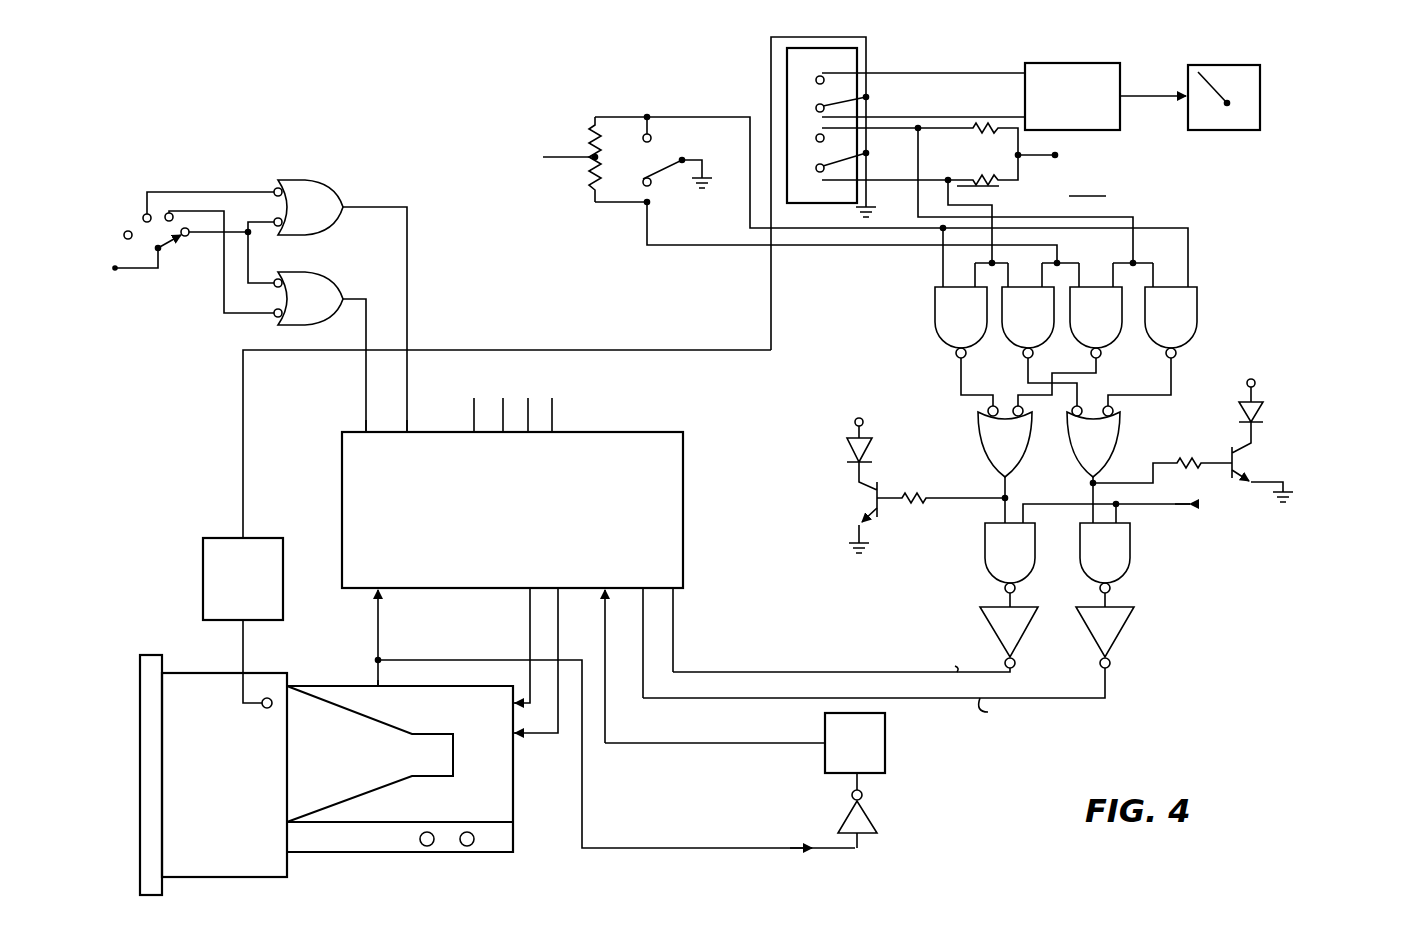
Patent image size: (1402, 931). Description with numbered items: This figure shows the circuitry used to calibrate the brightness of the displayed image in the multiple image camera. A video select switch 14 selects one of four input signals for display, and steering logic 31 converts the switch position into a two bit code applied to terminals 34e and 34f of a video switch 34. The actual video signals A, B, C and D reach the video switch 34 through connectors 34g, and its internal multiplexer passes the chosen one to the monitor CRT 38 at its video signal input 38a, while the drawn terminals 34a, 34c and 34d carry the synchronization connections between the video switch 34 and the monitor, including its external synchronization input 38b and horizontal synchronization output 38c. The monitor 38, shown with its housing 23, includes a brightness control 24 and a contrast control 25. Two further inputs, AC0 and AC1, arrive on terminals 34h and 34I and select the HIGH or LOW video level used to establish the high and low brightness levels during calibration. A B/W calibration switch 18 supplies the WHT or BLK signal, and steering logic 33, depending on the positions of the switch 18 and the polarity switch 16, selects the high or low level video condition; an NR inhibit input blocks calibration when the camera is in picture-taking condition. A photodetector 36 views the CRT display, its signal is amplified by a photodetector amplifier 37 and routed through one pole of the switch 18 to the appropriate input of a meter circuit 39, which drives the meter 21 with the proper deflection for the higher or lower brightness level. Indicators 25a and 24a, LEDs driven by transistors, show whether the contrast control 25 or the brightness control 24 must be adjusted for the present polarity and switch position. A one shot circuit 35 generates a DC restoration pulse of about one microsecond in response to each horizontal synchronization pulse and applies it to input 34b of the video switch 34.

The video select switch 14 is at (170, 245).
The steering logic 31 is at (352, 266).
The switch 16 is at (668, 156).
The B/W calibration switch 18 is at (866, 55).
The meter circuit 39 is at (1108, 63).
The meter 21 is at (1260, 108).
The steering logic 33 is at (1054, 478).
The indicator 25a is at (872, 448).
The indicator 24a is at (1260, 405).
The video switch 34 is at (522, 574).
The horizontal sync input terminal 34a is at (397, 638).
The input 34b is at (715, 666).
The video output terminal 34c is at (510, 645).
The external sync output terminal 34d is at (553, 660).
The terminal 34e is at (368, 436).
The terminal 34f is at (409, 436).
The connectors 34g is at (513, 415).
The terminal 34h is at (691, 630).
The terminal 34I is at (657, 643).
The one shot circuit 35 is at (885, 748).
The photodetector amplifier 37 is at (283, 554).
The photodetector 36 is at (269, 708).
The monitor 23 is at (148, 823).
The monitor CRT 38 is at (368, 805).
The video signal input 38a is at (532, 713).
The external synchronization input 38b is at (532, 745).
The horizontal synchronization output 38c is at (381, 693).
The brightness control 24 is at (427, 846).
The contrast control 25 is at (472, 845).